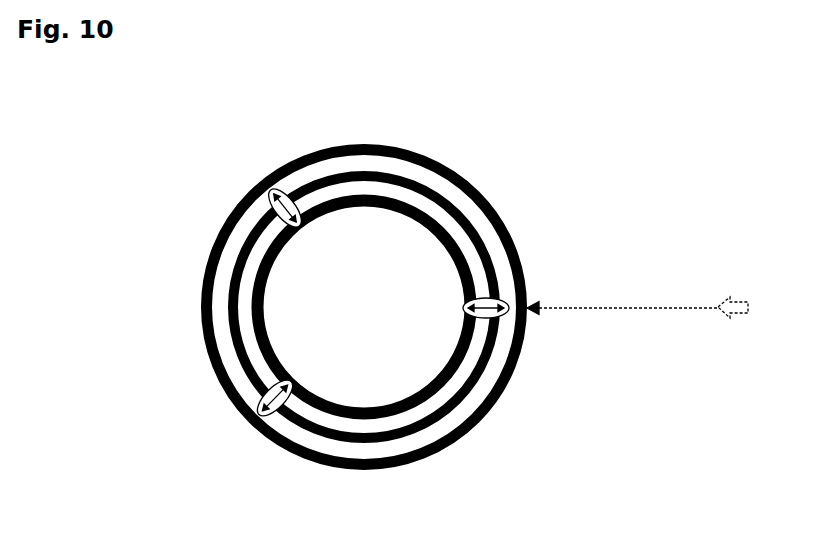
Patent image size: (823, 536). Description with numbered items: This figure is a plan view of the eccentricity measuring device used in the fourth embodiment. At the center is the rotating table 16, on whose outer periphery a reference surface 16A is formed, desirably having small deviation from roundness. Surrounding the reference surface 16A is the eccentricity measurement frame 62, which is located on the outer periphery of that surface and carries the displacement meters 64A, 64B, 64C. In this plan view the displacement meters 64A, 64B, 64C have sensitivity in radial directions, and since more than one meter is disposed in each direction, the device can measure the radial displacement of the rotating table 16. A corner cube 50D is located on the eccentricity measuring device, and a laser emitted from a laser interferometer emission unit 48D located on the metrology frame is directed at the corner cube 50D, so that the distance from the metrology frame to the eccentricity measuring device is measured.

The rotating table 16 is at (446, 382).
The reference surface 16A is at (446, 224).
The laser interferometer emission unit 48D is at (737, 297).
The corner cube 50D is at (528, 317).
The eccentricity measurement frame 62 is at (208, 355).
The displacement meter 64A is at (283, 192).
The displacement meter 64B is at (273, 417).
The displacement meter 64C is at (506, 300).